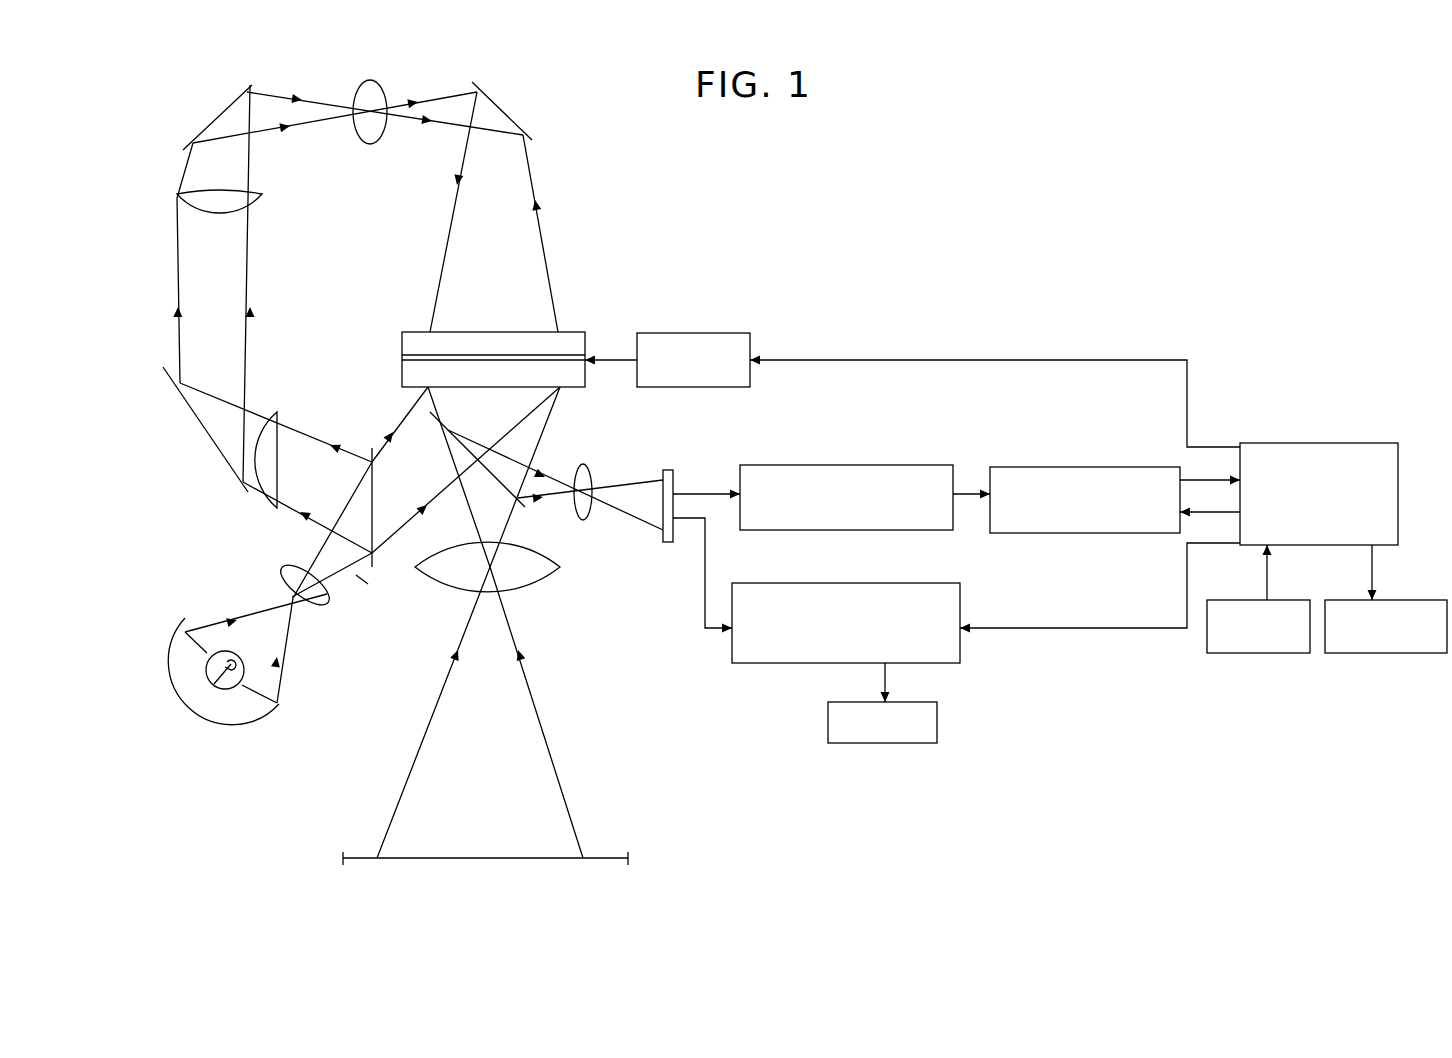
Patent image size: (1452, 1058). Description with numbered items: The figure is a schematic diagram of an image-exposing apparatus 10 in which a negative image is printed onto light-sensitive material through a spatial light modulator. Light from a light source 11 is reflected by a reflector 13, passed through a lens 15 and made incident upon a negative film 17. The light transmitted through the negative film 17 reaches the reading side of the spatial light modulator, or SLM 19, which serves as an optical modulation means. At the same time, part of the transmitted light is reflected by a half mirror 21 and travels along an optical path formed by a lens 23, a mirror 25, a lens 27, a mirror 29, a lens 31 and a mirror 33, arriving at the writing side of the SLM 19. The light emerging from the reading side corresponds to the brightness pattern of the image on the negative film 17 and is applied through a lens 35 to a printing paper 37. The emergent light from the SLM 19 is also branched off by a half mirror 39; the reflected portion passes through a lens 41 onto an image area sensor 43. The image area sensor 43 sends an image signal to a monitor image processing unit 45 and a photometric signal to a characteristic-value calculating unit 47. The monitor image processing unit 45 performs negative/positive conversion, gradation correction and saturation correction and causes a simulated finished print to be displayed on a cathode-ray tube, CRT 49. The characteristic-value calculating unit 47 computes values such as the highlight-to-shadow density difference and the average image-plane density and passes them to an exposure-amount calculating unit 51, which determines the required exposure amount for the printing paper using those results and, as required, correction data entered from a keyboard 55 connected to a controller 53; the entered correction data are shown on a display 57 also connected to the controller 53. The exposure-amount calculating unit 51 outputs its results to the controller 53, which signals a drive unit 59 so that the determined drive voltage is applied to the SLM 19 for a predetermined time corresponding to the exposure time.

The image-exposing apparatus 10 is at (627, 167).
The light source 11 is at (207, 703).
The reflector 13 is at (249, 712).
The lens 15 is at (325, 604).
The negative film 17 is at (363, 578).
The spatial light modulator (SLM) 19 is at (583, 332).
The half mirror 21 is at (374, 497).
The lens 23 is at (277, 413).
The mirror 25 is at (205, 433).
The lens 27 is at (262, 196).
The mirror 29 is at (225, 113).
The lens 31 is at (372, 145).
The mirror 33 is at (493, 103).
The lens 35 is at (560, 567).
The printing paper 37 is at (612, 858).
The half mirror 39 is at (463, 437).
The lens 41 is at (583, 520).
The image area sensor 43 is at (667, 468).
The monitor image processing unit 45 is at (770, 583).
The characteristic-value calculating unit 47 is at (803, 465).
The cathode-ray tube (CRT) 49 is at (937, 720).
The exposure-amount calculating unit 51 is at (1052, 533).
The controller 53 is at (1275, 443).
The keyboard 55 is at (1250, 653).
The display 57 is at (1365, 653).
The drive unit 59 is at (703, 333).